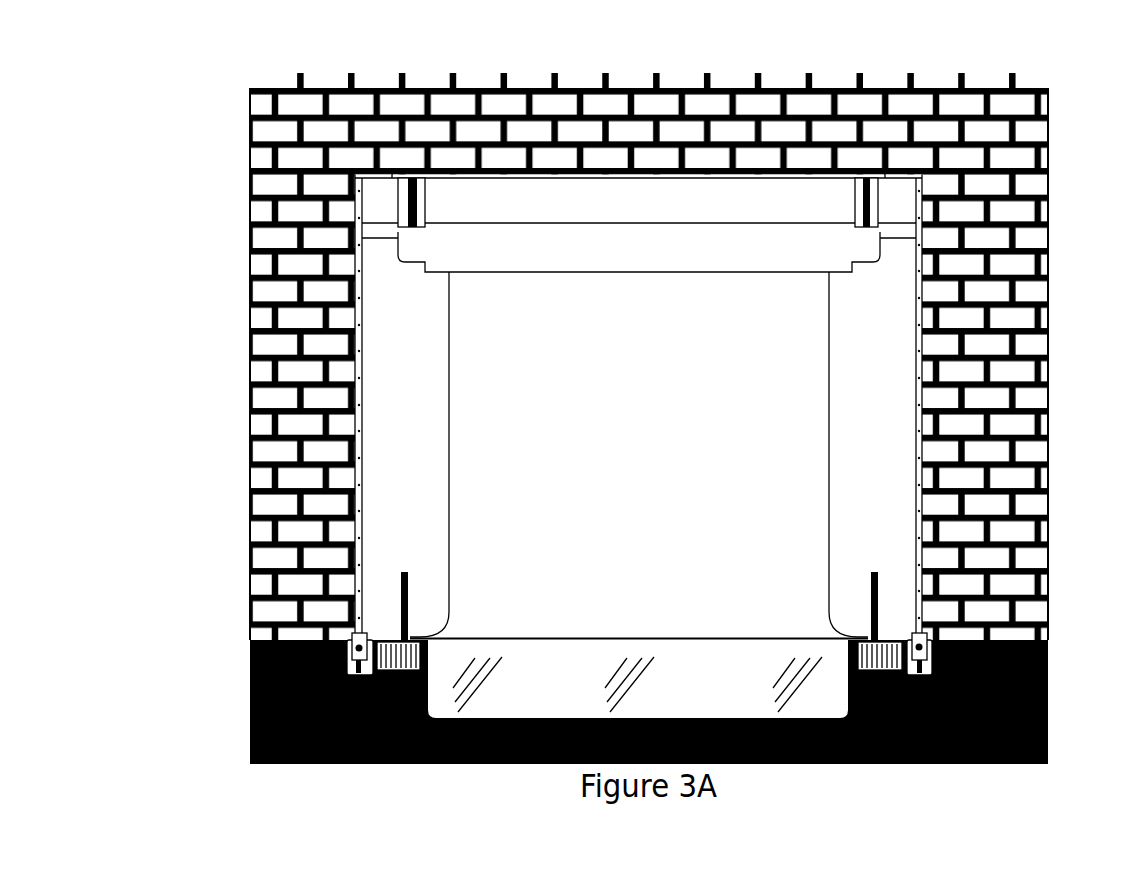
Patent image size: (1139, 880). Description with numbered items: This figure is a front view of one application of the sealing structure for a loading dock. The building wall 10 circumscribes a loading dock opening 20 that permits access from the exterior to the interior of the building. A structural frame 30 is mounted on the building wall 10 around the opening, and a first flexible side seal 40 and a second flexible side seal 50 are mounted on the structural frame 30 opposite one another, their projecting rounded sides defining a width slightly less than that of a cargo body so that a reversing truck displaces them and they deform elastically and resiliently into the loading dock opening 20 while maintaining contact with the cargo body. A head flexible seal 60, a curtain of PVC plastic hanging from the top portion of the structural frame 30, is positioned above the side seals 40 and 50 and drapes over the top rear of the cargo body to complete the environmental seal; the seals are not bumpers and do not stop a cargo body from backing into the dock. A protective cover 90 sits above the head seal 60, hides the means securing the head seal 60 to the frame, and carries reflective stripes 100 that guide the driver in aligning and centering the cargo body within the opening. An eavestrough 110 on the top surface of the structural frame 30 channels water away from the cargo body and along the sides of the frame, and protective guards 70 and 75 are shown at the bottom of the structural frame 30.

The building wall 10 is at (307, 313).
The loading dock opening 20 is at (675, 376).
The structural frame 30 is at (359, 509).
The first flexible side seal 40 is at (858, 438).
The second flexible side seal 50 is at (398, 441).
The head flexible seal 60 is at (557, 243).
The protective guard 70 is at (919, 647).
The protective guard 75 is at (358, 648).
The protective cover 90 is at (683, 203).
The reflective stripes 100 is at (410, 195).
The eavestrough 110 is at (764, 173).